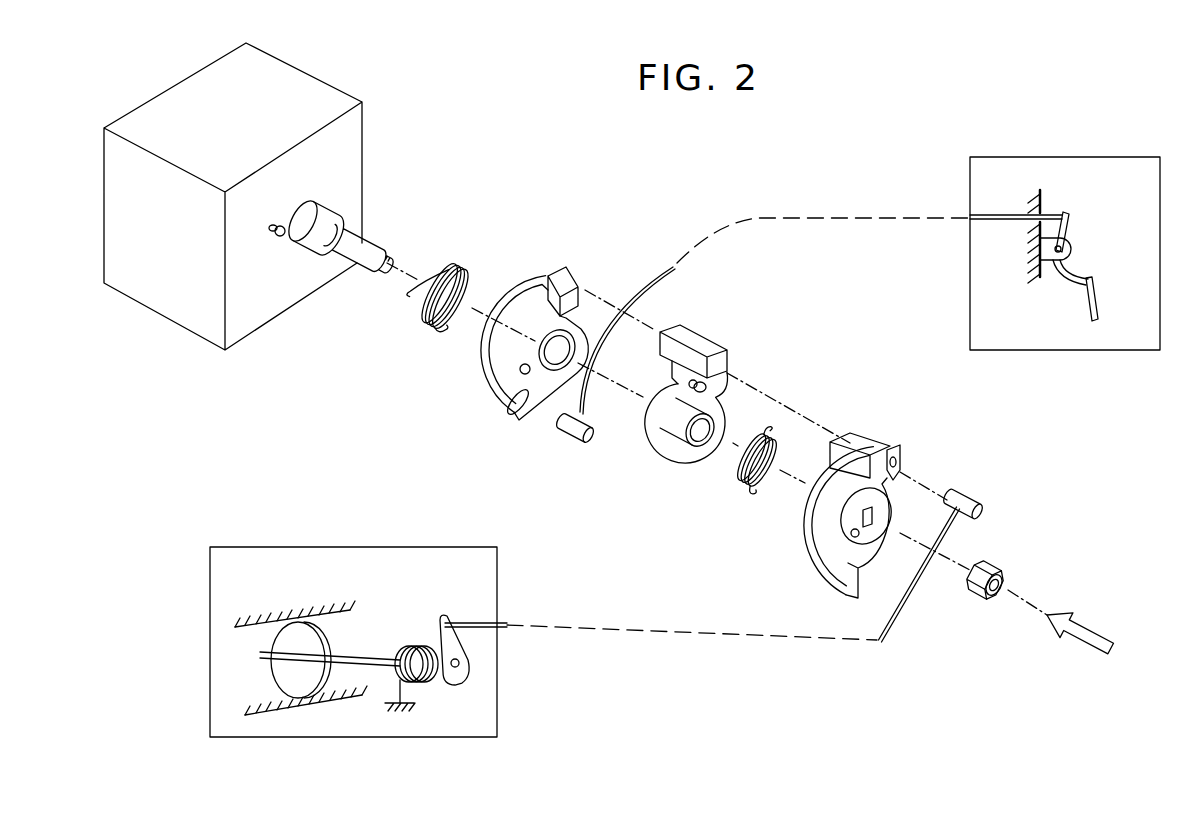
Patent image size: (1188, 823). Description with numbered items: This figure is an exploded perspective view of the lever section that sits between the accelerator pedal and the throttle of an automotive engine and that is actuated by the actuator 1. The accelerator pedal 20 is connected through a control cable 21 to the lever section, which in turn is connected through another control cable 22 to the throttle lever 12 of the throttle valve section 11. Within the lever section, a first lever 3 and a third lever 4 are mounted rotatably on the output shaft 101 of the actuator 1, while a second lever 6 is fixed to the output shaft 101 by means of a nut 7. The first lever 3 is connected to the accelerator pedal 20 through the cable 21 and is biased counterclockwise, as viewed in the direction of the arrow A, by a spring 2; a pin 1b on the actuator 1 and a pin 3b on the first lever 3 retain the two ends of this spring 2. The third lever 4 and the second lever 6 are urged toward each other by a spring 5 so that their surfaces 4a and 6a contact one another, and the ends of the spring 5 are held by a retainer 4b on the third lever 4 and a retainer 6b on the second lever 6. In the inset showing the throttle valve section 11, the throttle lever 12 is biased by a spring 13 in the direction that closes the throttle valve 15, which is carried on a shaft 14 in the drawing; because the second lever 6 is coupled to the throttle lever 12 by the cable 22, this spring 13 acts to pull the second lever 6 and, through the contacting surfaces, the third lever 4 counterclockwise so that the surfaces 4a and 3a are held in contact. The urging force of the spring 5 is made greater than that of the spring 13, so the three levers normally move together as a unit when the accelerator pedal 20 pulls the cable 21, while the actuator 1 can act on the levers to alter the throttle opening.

The actuator 1 is at (317, 87).
The output shaft 101 is at (362, 232).
The pin 1b is at (283, 238).
The spring 2 is at (465, 264).
The first lever 3 is at (487, 352).
The surface 3a is at (577, 287).
The pin 3b is at (523, 370).
The third lever 4 is at (662, 445).
The surface 4a is at (682, 347).
The retainer 4b is at (710, 392).
The spring 5 is at (733, 475).
The second lever 6 is at (808, 524).
The surface 6a is at (866, 437).
The retainer 6b is at (857, 534).
The nut 7 is at (988, 567).
The throttle valve section 11 is at (500, 563).
The throttle lever 12 is at (445, 618).
The spring 13 is at (410, 645).
The throttle shaft 14 is at (372, 655).
The throttle valve 15 is at (278, 678).
The accelerator pedal 20 is at (1070, 224).
The control cable 21 is at (826, 212).
The control cable 22 is at (900, 620).
The arrow A is at (1087, 631).